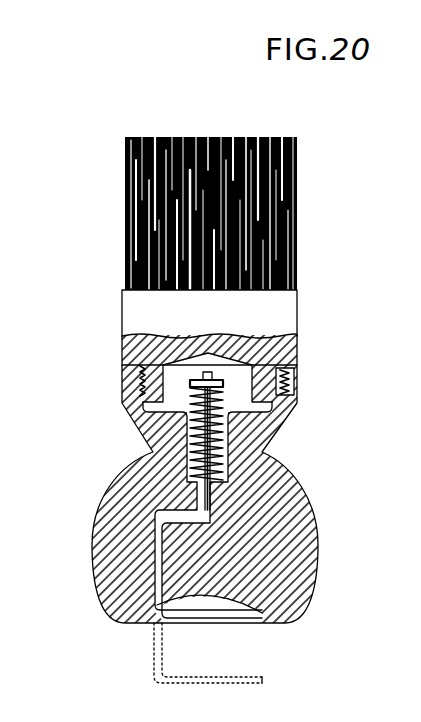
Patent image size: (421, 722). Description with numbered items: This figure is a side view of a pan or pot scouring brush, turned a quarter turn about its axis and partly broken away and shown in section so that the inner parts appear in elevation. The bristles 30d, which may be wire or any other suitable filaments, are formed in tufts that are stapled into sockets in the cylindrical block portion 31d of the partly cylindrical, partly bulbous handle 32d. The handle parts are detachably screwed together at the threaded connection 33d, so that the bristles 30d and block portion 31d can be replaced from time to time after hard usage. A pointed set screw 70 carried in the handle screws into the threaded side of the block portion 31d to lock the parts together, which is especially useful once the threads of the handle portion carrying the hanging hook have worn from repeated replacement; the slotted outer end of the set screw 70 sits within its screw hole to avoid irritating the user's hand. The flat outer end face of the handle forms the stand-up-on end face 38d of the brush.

The bristles 30d is at (297, 205).
The cylindrical block portion 31d is at (297, 348).
The handle 32d is at (120, 495).
The screw connection 33d is at (122, 378).
The pointed set screw 70 is at (297, 388).
The stand-up-on end face 38d is at (272, 626).